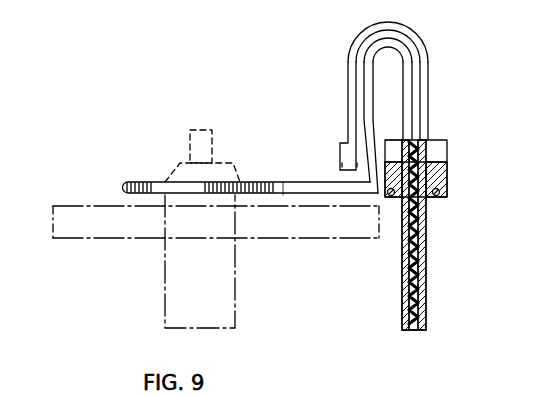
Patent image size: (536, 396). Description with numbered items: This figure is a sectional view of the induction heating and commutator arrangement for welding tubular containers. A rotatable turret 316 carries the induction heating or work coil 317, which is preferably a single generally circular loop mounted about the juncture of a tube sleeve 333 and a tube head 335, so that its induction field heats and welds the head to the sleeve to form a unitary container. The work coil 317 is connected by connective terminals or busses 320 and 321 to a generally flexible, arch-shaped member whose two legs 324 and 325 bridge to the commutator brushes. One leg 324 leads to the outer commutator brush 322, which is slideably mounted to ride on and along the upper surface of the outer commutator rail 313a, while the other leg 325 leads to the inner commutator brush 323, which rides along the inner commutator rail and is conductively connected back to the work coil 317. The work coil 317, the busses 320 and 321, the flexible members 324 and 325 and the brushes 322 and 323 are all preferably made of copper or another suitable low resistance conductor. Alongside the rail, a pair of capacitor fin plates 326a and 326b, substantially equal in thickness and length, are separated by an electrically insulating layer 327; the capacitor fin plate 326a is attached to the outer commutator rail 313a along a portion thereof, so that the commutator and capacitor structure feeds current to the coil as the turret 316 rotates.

The outer commutator rail 313a is at (448, 182).
The rotatable turret 316 is at (54, 223).
The work coil 317 is at (122, 187).
The connective terminal or bus 320 is at (330, 181).
The connective terminal or bus 321 is at (290, 185).
The outer commutator brush 322 is at (443, 151).
The inner commutator brush 323 is at (397, 136).
The leg of flexible member 324 is at (430, 80).
The leg of flexible member 325 is at (361, 78).
The capacitor fin plate 326a is at (427, 253).
The capacitor fin plate 326b is at (401, 311).
The electrically insulating layer 327 is at (413, 331).
The tube sleeve 333 is at (237, 300).
The tube head 335 is at (180, 159).